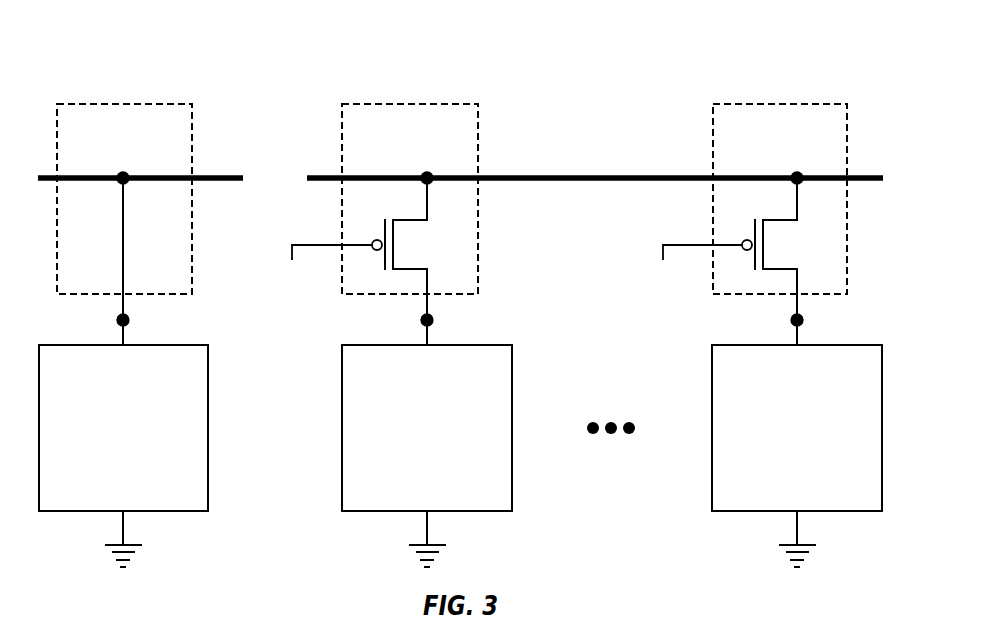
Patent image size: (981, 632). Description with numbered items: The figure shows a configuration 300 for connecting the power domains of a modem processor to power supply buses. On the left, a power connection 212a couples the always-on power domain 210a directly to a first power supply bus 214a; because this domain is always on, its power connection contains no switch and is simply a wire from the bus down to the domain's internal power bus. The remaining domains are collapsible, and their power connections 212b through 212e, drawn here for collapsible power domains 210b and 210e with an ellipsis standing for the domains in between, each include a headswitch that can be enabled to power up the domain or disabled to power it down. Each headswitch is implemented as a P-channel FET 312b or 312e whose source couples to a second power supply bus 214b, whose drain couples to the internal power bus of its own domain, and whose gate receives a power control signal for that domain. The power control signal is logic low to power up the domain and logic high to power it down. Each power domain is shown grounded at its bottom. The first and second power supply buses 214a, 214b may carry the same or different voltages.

The configuration 300 is at (865, 62).
The power connection 212a is at (117, 103).
The power connection 212b is at (385, 207).
The power connection 212e is at (755, 207).
The power supply bus 214a is at (227, 164).
The power supply bus 214b is at (619, 163).
The always-on power domain 210a is at (192, 331).
The collapsible power domain 210b is at (494, 331).
The collapsible power domain 210e is at (864, 331).
The P-channel FET 312b is at (427, 258).
The P-channel FET 312e is at (797, 258).